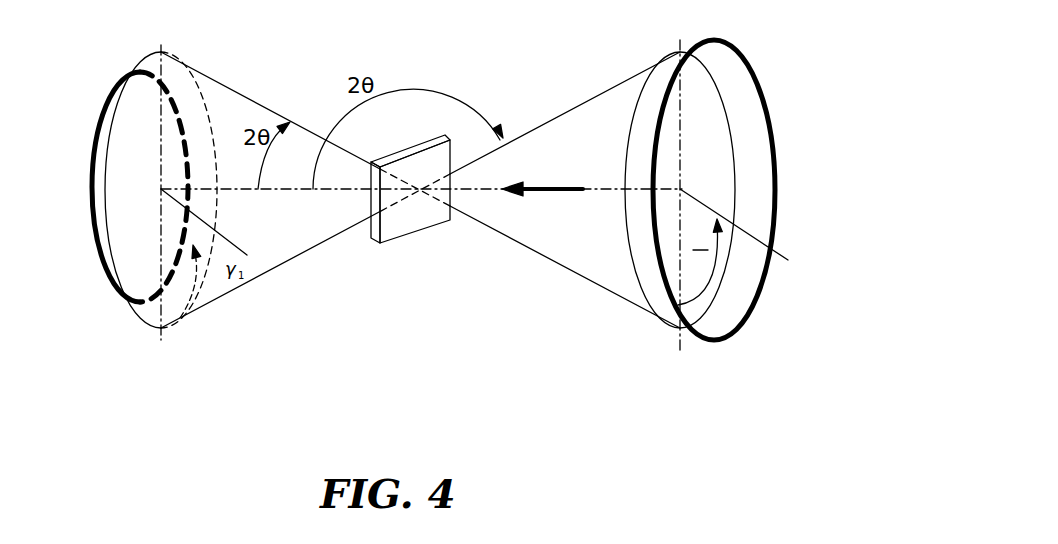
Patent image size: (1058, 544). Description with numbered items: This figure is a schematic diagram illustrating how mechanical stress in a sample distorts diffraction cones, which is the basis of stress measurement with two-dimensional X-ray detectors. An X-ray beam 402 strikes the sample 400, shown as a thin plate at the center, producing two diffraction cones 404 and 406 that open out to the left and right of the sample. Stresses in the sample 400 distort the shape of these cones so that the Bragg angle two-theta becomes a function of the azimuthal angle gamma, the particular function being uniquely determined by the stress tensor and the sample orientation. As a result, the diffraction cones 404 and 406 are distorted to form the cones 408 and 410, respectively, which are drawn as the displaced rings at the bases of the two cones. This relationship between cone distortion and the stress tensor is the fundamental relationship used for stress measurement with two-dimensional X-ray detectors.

The sample 400 is at (415, 163).
The X-ray beam 402 is at (552, 189).
The diffraction cone 404 is at (235, 300).
The diffraction cone 406 is at (598, 292).
The distorted cone 408 is at (225, 243).
The distorted cone 410 is at (686, 336).